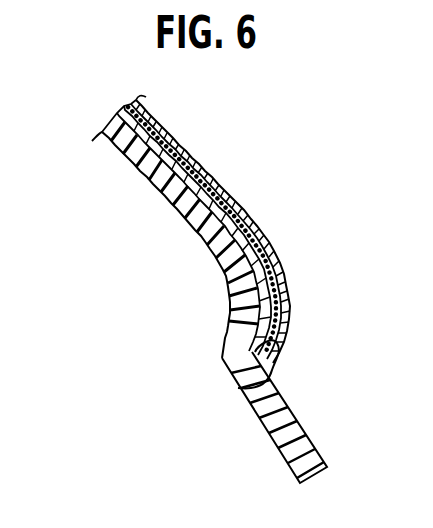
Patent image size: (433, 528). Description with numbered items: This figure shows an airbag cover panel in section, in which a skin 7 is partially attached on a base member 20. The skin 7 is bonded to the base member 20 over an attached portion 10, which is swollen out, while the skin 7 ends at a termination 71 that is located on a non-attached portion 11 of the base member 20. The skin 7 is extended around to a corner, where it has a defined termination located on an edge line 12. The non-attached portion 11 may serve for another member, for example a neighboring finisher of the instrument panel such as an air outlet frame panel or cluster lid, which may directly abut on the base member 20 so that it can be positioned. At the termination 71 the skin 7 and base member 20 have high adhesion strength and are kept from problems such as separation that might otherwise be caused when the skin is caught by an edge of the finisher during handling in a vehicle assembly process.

The skin 7 is at (238, 186).
The base member 20 is at (131, 166).
The attached portion 10 is at (203, 243).
The termination 71 is at (270, 345).
The edge line 12 is at (238, 388).
The non-attached portion 11 is at (277, 397).